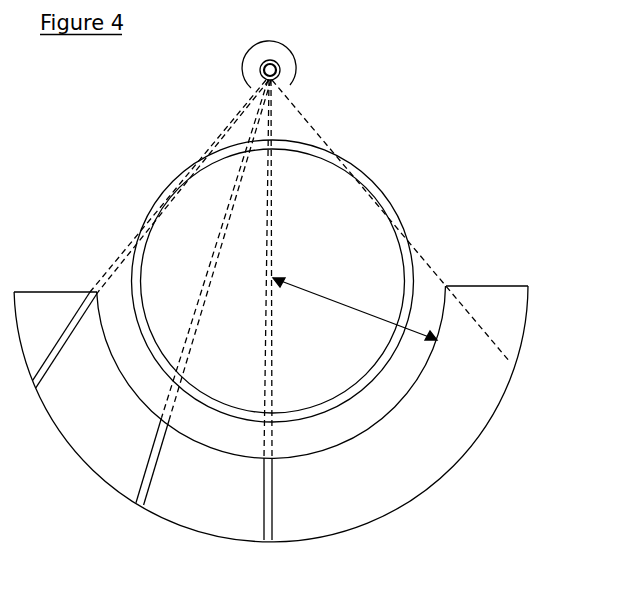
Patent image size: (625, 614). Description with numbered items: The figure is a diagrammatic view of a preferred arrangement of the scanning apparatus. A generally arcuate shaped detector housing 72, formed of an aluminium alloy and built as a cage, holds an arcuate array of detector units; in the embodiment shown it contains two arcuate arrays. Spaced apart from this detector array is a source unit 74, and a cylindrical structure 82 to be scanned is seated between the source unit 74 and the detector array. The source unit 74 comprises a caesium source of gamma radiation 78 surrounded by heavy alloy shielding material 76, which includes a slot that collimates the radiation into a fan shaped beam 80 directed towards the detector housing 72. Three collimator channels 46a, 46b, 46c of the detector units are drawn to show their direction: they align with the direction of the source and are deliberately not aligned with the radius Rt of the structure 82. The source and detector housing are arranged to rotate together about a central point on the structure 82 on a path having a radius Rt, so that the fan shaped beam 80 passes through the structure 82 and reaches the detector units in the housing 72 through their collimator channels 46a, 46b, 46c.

The detector housing 72 is at (512, 345).
The source unit 74 is at (233, 69).
The heavy alloy shielding material 76 is at (292, 74).
The caesium source of gamma radiation 78 is at (280, 62).
The fan shaped beam 80 is at (326, 137).
The cylindrical structure 82 is at (380, 187).
The radius Rt is at (355, 309).
The collimator channel 46a is at (82, 310).
The collimator channel 46b is at (158, 437).
The collimator channel 46c is at (268, 472).